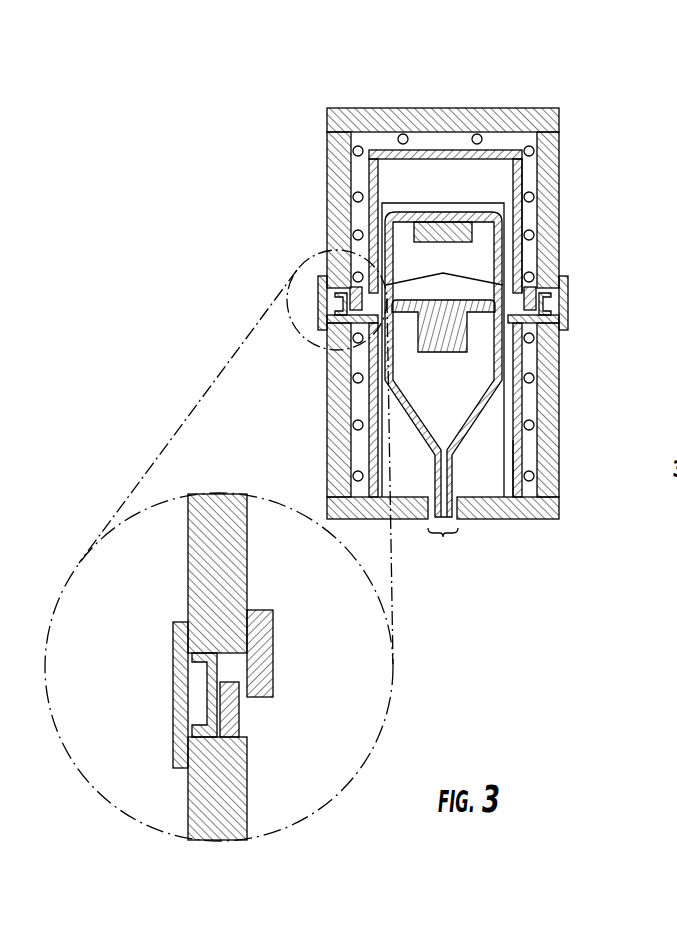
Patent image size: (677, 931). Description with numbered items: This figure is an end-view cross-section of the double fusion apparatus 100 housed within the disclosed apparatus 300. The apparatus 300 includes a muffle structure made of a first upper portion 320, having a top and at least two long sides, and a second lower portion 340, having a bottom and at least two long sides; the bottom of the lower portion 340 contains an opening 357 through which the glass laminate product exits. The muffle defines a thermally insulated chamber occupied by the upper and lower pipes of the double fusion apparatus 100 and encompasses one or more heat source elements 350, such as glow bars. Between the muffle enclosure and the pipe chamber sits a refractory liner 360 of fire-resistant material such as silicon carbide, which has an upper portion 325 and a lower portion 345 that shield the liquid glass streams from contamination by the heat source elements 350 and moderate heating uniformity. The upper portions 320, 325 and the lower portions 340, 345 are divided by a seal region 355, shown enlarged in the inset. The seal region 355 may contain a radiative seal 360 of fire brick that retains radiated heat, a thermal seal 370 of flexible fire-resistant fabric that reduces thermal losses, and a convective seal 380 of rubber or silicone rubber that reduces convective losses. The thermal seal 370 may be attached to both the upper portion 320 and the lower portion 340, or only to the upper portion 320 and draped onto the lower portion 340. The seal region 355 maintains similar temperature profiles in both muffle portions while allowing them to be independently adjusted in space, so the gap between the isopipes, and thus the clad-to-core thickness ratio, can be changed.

The double fusion apparatus 100 is at (446, 203).
The apparatus 300 is at (578, 94).
The first upper portion 320 is at (560, 202).
The upper portion of refractory liner 325 is at (522, 258).
The second lower portion 340 is at (559, 423).
The lower portion of refractory liner 345 is at (521, 460).
The heat source element 350 is at (357, 146).
The seal region 355 is at (307, 253).
The opening 357 is at (443, 538).
The refractory liner 360 is at (518, 178).
The thermal seal 370 is at (207, 684).
The convective seal 380 is at (173, 735).